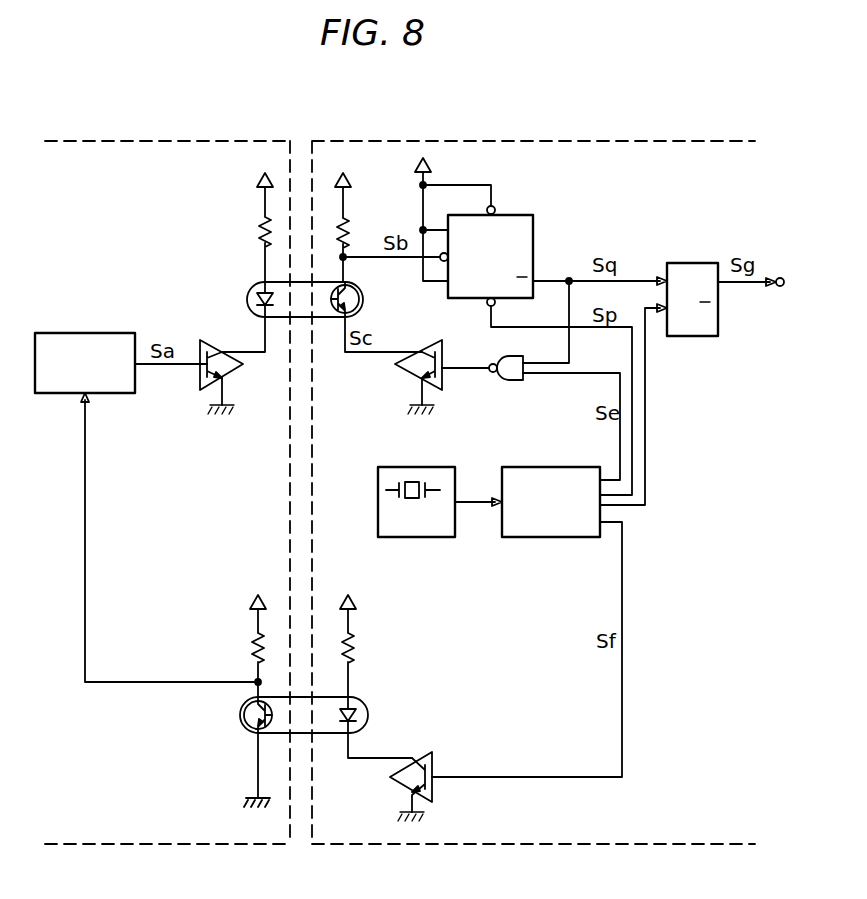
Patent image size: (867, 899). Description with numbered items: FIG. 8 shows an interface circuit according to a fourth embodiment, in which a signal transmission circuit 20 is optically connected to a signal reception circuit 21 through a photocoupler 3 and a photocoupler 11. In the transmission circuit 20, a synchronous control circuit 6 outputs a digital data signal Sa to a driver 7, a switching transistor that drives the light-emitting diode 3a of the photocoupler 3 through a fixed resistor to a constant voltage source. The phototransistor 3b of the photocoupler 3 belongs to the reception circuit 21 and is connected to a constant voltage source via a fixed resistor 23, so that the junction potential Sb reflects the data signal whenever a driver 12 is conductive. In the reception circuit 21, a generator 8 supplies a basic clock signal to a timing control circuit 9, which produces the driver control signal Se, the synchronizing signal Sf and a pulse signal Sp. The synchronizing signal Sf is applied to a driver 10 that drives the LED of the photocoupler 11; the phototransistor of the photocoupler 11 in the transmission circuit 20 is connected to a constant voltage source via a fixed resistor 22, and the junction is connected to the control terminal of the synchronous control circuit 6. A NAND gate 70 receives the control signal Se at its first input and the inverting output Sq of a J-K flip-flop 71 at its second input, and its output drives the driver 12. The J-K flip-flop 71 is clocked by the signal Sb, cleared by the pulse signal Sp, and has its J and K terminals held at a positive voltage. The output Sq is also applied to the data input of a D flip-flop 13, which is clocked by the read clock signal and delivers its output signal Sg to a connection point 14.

The photocoupler 3 is at (301, 336).
The light-emitting diode 3a is at (250, 298).
The phototransistor 3b is at (358, 298).
The synchronous control circuit 6 is at (92, 333).
The driver 7 is at (204, 346).
The generator 8 is at (436, 467).
The timing control circuit 9 is at (558, 467).
The driver 10 is at (434, 760).
The photocoupler 11 is at (303, 733).
The driver 12 is at (440, 350).
The D flip-flop 13 is at (690, 337).
The connection point 14 is at (780, 287).
The signal transmission circuit 20 is at (228, 140).
The signal reception circuit 21 is at (584, 140).
The fixed resistor 22 is at (250, 650).
The fixed resistor 23 is at (350, 228).
The NAND gate 70 is at (432, 382).
The J-K flip-flop 71 is at (534, 236).